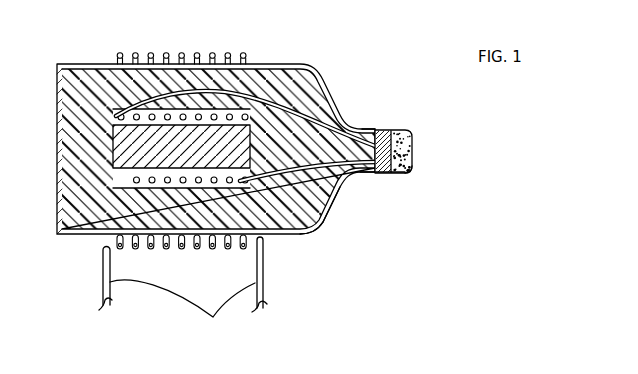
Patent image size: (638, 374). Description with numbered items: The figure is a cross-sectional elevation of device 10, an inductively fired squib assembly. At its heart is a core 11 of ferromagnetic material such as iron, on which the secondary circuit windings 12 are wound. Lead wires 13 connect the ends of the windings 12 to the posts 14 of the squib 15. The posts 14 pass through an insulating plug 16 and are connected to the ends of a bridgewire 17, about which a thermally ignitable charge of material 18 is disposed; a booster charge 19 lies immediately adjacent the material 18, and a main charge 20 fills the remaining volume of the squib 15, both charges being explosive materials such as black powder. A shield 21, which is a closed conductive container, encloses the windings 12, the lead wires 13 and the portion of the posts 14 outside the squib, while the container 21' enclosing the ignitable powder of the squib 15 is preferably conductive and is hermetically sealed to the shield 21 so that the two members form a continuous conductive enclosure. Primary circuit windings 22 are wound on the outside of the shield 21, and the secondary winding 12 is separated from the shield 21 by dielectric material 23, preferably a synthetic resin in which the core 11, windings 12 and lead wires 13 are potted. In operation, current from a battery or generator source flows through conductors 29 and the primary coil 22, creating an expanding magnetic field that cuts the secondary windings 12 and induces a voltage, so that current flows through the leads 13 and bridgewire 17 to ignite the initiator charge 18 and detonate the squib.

The device 10 is at (346, 69).
The core 11 is at (114, 167).
The secondary circuit windings 12 is at (176, 185).
The lead wires 13 is at (312, 122).
The posts 14 is at (374, 146).
The squib 15 is at (408, 172).
The insulating plug 16 is at (378, 178).
The bridgewire 17 is at (412, 141).
The thermally ignitable charge of material 18 is at (389, 175).
The booster charge 19 is at (398, 131).
The main charge 20 is at (413, 158).
The shield 21 is at (343, 215).
The container 21' is at (411, 193).
The primary circuit windings 22 is at (119, 52).
The dielectric material 23 is at (314, 235).
The conductors 29 is at (183, 290).